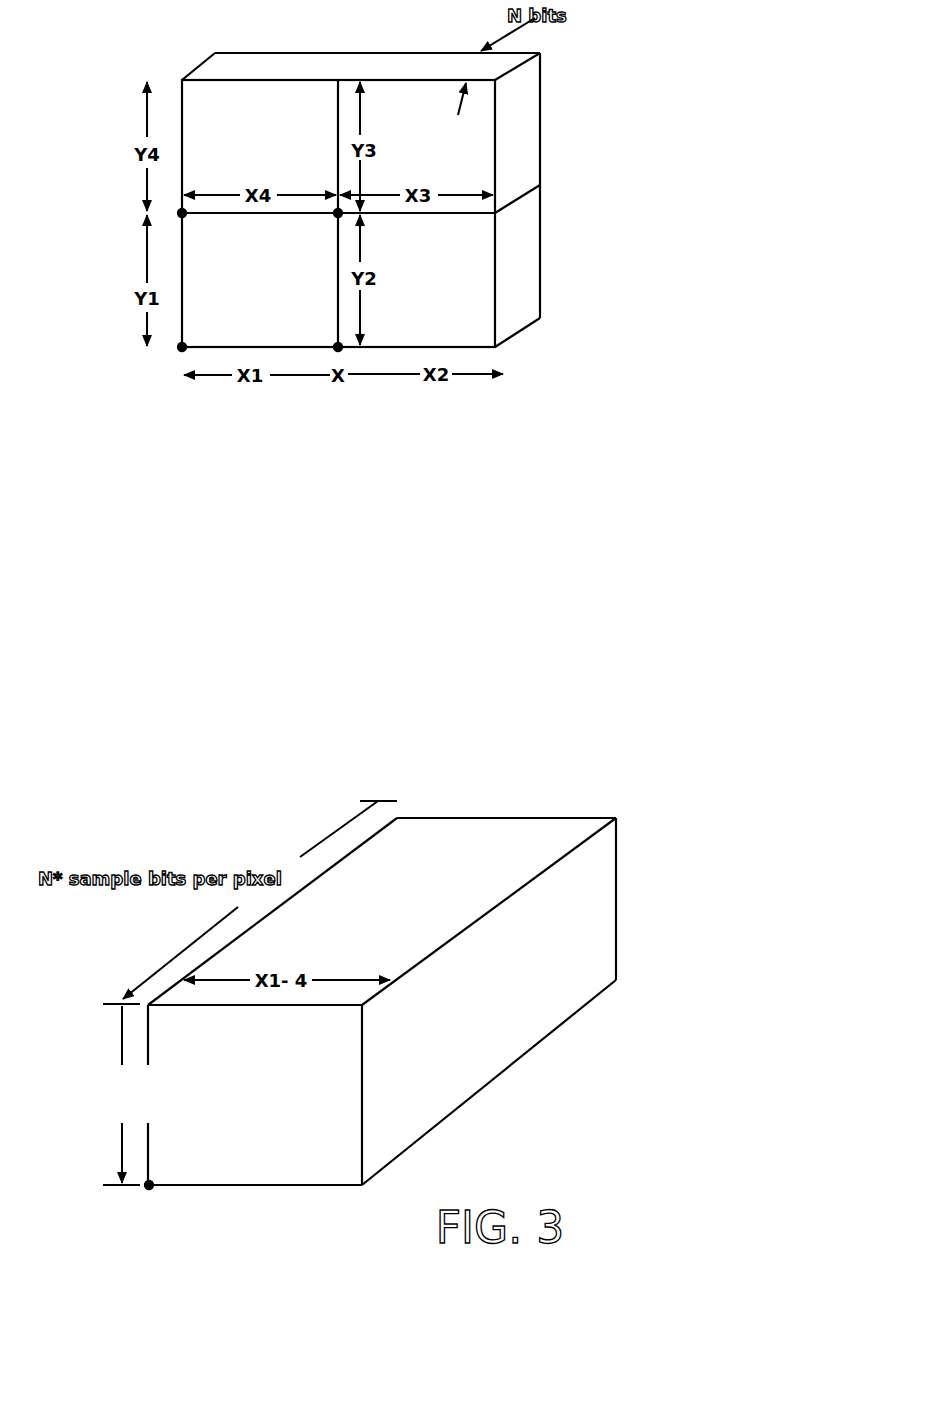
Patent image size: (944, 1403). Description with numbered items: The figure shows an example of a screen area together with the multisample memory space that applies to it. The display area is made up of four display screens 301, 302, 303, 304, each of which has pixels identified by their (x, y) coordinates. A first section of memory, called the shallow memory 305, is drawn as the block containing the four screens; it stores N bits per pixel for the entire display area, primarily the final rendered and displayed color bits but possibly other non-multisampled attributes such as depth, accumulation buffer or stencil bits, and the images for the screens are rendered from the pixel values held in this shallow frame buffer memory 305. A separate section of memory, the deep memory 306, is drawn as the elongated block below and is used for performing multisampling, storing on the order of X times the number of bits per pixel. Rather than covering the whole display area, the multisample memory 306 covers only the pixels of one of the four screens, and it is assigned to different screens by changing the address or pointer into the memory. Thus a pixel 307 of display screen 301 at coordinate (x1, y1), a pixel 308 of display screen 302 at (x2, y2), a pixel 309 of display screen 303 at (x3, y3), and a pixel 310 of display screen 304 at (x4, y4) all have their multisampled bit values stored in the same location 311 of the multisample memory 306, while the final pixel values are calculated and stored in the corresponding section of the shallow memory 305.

The display screen 301 is at (260, 280).
The display screen 302 is at (416, 280).
The display screen 303 is at (416, 146).
The display screen 304 is at (260, 146).
The shallow memory 305 is at (262, 53).
The deep memory 306 is at (382, 1001).
The pixel 307 is at (182, 347).
The pixel 308 is at (338, 347).
The pixel 309 is at (335, 210).
The pixel 310 is at (182, 213).
The location 311 is at (149, 1185).